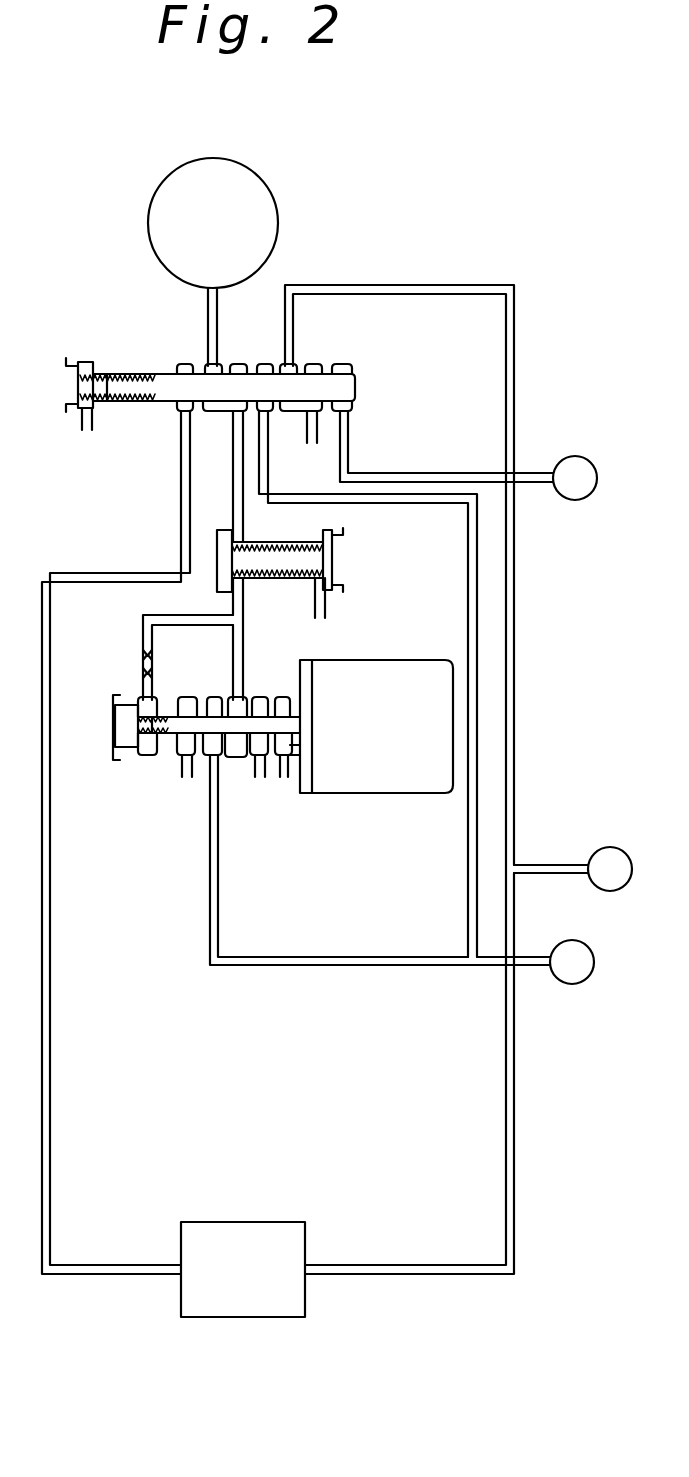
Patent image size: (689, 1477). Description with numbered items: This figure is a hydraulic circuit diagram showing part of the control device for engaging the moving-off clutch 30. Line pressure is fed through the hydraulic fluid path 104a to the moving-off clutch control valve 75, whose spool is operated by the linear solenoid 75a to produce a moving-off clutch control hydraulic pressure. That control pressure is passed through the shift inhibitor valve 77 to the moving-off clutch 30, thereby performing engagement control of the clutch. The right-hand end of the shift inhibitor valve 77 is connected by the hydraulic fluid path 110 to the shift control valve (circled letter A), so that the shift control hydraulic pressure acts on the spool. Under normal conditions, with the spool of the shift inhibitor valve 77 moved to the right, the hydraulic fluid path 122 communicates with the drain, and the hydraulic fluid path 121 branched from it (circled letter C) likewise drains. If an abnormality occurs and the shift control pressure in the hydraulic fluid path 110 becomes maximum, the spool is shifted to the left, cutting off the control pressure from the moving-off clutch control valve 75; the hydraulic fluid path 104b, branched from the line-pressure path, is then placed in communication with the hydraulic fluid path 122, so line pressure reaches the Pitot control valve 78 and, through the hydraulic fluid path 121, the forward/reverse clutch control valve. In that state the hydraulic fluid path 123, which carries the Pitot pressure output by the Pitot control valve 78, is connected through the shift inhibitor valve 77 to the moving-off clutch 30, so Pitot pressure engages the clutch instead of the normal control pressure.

The moving-off clutch 30 is at (190, 245).
The shift inhibitor valve 77 is at (336, 372).
The hydraulic fluid path 110 is at (426, 473).
The hydraulic fluid path 122 is at (514, 578).
The hydraulic fluid path 104b is at (477, 705).
The hydraulic fluid path 121 is at (556, 864).
The hydraulic fluid path 104a is at (342, 957).
The hydraulic fluid path 123 is at (50, 1078).
The moving-off clutch control valve 75 is at (178, 737).
The linear solenoid 75a is at (413, 703).
The Pitot control valve 78 is at (243, 1222).